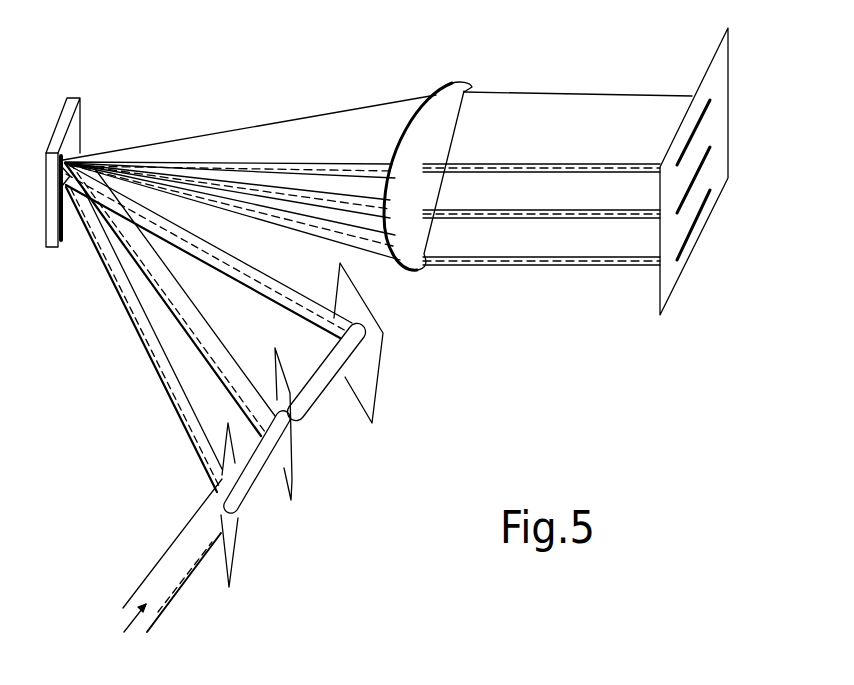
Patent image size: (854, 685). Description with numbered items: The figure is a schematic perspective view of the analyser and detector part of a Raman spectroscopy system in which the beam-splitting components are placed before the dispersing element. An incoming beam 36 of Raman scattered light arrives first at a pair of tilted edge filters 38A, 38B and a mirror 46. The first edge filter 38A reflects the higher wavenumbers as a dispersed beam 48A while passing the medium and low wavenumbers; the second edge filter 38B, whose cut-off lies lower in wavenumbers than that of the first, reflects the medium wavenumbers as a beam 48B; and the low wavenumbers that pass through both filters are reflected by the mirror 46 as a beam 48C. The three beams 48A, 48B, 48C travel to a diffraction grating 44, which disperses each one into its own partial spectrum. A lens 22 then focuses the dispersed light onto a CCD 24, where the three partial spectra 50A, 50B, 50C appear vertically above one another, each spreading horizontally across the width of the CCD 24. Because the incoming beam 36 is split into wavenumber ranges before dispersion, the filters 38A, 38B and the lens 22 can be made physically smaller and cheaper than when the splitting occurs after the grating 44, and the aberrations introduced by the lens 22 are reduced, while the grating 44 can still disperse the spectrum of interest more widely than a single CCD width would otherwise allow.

The lens 22 is at (460, 82).
The CCD 24 is at (708, 63).
The incoming beam 36 is at (183, 547).
The edge filter 38A is at (238, 550).
The edge filter 38B is at (293, 473).
The diffraction grating 44 is at (76, 94).
The mirror 46 is at (381, 369).
The dispersed beam 48A is at (177, 407).
The beam 48B is at (188, 322).
The beam 48C is at (298, 309).
The spectrum 50A is at (703, 117).
The spectrum 50B is at (703, 165).
The spectrum 50C is at (697, 217).